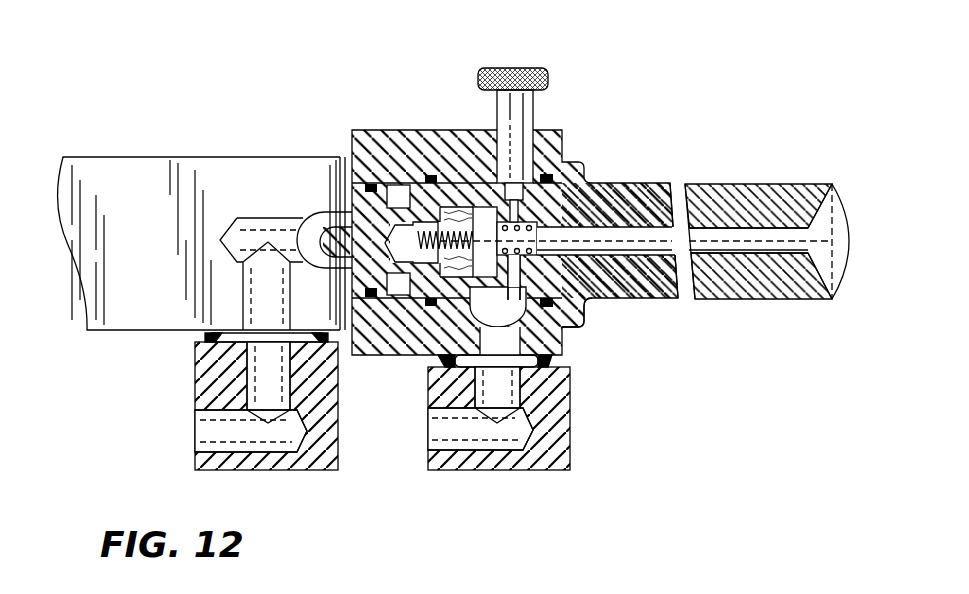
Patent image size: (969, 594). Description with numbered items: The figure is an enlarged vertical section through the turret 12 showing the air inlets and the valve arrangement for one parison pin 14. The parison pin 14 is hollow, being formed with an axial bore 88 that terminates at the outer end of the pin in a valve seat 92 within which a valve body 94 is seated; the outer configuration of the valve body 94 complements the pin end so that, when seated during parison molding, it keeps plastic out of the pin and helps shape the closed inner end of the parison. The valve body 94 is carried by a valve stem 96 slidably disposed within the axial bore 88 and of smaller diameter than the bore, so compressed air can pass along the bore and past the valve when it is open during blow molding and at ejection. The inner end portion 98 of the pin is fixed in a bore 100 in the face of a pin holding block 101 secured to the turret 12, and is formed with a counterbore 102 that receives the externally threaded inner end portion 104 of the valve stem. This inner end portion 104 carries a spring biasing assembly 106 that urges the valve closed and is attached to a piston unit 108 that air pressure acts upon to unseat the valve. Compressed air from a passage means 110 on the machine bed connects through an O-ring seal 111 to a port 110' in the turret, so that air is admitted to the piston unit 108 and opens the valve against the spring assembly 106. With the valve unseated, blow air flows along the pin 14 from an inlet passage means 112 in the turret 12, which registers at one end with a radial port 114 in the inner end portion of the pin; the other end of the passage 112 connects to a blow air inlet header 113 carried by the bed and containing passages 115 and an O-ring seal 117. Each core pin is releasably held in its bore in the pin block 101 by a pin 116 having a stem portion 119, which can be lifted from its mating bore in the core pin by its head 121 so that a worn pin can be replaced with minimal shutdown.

The turret 12 is at (140, 210).
The parison pin 14 is at (752, 311).
The axial bore 88 is at (720, 232).
The valve seat 92 is at (825, 292).
The valve body 94 is at (840, 213).
The valve stem 96 is at (760, 237).
The inner end portion of the pin 98 is at (590, 206).
The bore 100 is at (553, 180).
The pin holding block 101 is at (378, 118).
The counterbore 102 is at (482, 207).
The inner end portion of the valve stem 104 is at (418, 185).
The spring biasing assembly 106 is at (545, 265).
The piston unit 108 is at (353, 192).
The passage means 110 is at (229, 406).
The port 110' is at (261, 252).
The O-ring seal 111 is at (320, 333).
The inlet passage means 112 is at (498, 305).
The blow air inlet header 113 is at (445, 468).
The radial port 114 is at (585, 324).
The passages 115 is at (438, 428).
The pin 116 is at (484, 99).
The O-ring seal 117 is at (445, 368).
The stem portion 119 is at (514, 183).
The head 121 is at (500, 68).